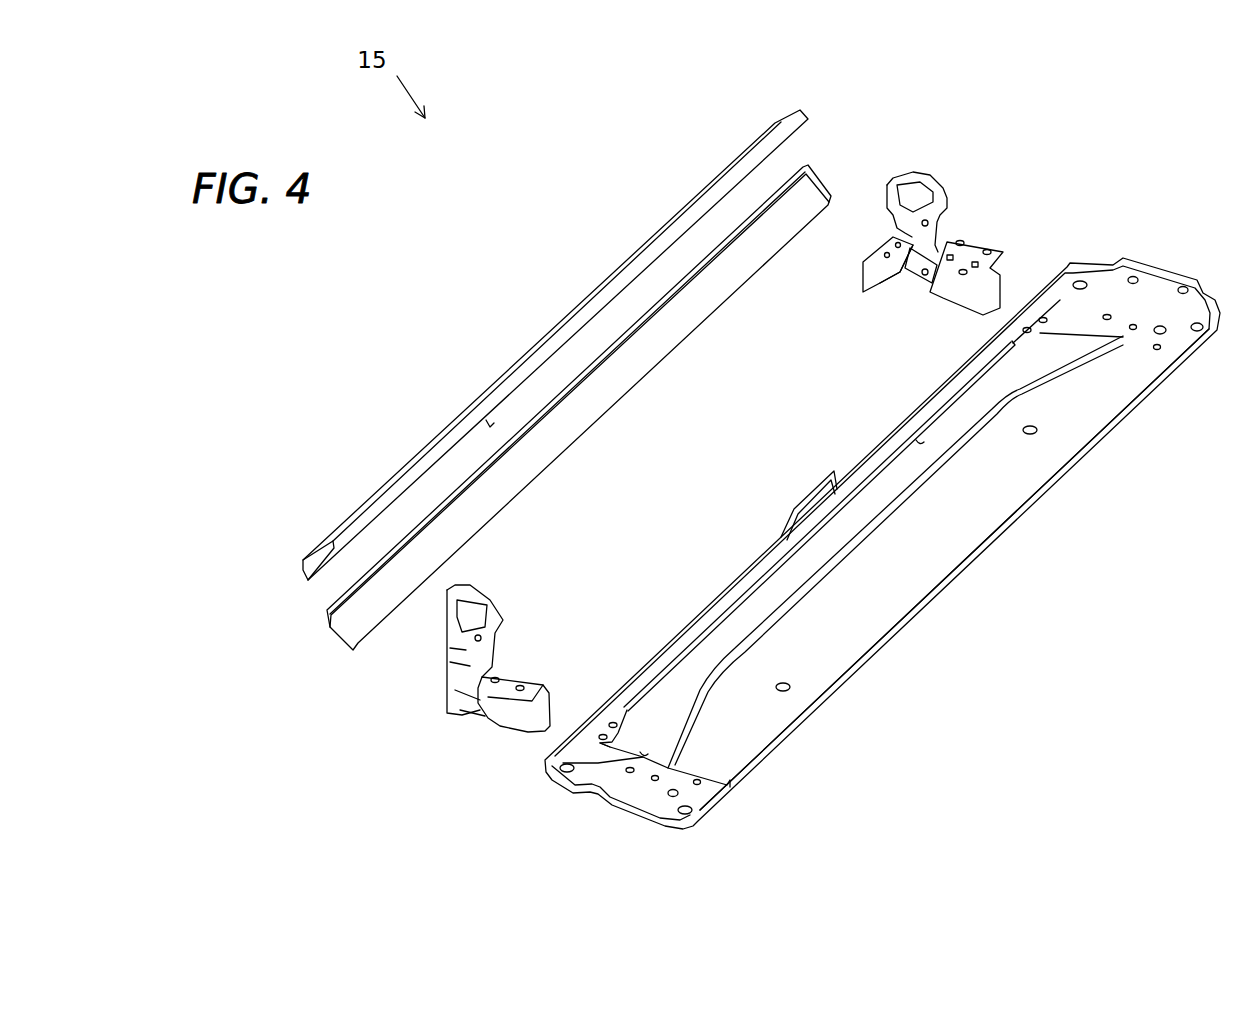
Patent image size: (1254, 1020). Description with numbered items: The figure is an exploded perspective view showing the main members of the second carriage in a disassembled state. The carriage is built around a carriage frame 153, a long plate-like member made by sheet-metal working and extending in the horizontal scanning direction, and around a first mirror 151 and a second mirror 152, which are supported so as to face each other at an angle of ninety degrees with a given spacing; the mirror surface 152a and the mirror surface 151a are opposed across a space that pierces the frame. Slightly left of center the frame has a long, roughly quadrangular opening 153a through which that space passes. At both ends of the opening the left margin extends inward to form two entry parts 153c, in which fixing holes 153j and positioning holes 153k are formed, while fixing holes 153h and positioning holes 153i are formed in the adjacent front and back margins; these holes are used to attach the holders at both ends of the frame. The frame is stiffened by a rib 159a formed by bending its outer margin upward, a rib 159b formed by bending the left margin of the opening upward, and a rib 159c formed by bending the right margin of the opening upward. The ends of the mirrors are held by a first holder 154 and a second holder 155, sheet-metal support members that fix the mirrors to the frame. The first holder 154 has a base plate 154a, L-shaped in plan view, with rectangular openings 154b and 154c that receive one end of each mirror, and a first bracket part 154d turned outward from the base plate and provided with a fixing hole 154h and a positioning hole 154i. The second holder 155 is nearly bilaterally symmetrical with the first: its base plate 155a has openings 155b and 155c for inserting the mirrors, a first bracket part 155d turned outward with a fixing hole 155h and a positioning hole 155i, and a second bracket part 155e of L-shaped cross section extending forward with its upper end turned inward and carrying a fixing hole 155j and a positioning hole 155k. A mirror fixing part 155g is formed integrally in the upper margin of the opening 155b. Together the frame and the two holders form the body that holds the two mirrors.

The first mirror 151 is at (555, 345).
The mirror surface 151a is at (453, 398).
The second mirror 152 is at (579, 407).
The mirror surface 152a is at (567, 393).
The carriage frame 153 is at (882, 543).
The opening 153a is at (782, 585).
The entry parts 153c is at (871, 597).
The fixing holes 153h is at (947, 542).
The positioning holes 153i is at (896, 542).
The fixing holes 153j is at (831, 480).
The positioning holes 153k is at (825, 488).
The first holder 154 is at (484, 682).
The base plate 154a is at (514, 725).
The rectangular opening 154b is at (513, 648).
The rectangular opening 154c is at (429, 674).
The first bracket part 154d is at (464, 737).
The fixing hole 154h is at (552, 671).
The positioning hole 154i is at (530, 651).
The second holder 155 is at (929, 234).
The base plate 155a is at (964, 295).
The opening 155b is at (934, 196).
The opening 155c is at (881, 296).
The first bracket part 155d is at (1017, 198).
The second bracket part 155e is at (848, 271).
The mirror fixing part 155g is at (920, 309).
The fixing hole 155h is at (1010, 230).
The positioning hole 155i is at (975, 215).
The fixing hole 155j is at (864, 225).
The positioning hole 155k is at (846, 243).
The rib 159a is at (954, 569).
The rib 159b is at (819, 526).
The rib 159c is at (889, 552).